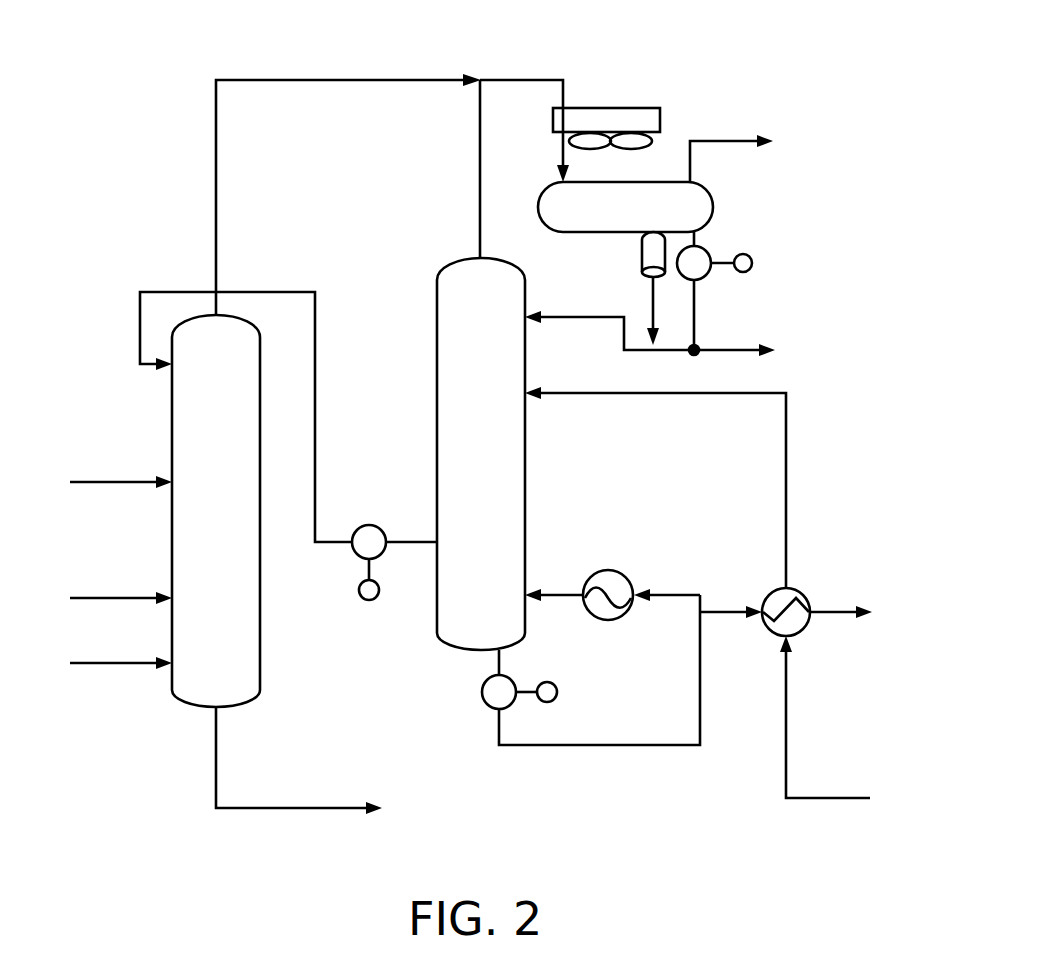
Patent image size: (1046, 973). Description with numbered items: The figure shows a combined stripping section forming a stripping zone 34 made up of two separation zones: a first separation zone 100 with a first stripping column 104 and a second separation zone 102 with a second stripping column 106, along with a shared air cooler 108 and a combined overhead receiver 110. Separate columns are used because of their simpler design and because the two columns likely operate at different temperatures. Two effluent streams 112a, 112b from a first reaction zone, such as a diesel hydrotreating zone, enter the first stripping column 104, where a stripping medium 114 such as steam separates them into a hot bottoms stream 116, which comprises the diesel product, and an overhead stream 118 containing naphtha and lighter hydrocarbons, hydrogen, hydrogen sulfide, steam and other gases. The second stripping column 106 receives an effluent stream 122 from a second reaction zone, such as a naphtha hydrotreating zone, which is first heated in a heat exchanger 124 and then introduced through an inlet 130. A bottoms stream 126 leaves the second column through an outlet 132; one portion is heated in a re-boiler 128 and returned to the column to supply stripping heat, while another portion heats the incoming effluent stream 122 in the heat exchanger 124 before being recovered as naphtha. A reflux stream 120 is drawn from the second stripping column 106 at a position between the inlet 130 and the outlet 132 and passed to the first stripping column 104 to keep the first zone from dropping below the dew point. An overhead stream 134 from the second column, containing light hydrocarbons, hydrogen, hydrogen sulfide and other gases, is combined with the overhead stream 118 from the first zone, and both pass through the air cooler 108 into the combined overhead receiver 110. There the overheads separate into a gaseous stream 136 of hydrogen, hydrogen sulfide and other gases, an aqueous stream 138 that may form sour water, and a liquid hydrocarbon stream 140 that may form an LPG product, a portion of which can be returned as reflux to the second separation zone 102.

The stripping zone 34 is at (438, 47).
The first separation zone 100 is at (126, 272).
The second separation zone 102 is at (422, 257).
The first stripping column 104 is at (170, 688).
The second stripping column 106 is at (436, 633).
The air cooler 108 is at (632, 107).
The combined overhead receiver 110 is at (538, 207).
The effluent stream 112a is at (117, 596).
The effluent stream 112b is at (117, 478).
The stripping medium 114 is at (112, 660).
The hot bottoms stream 116 is at (218, 758).
The overhead stream 118 is at (216, 170).
The reflux stream 120 is at (140, 326).
The effluent stream 122 is at (788, 702).
The heat exchanger 124 is at (800, 590).
The bottoms stream 126 is at (608, 748).
The re-boiler 128 is at (608, 569).
The inlet 130 is at (527, 397).
The outlet 132 is at (500, 650).
The overhead stream 134 is at (480, 171).
The gaseous stream 136 is at (731, 140).
The aqueous stream 138 is at (652, 297).
The liquid hydrocarbon stream 140 is at (697, 305).